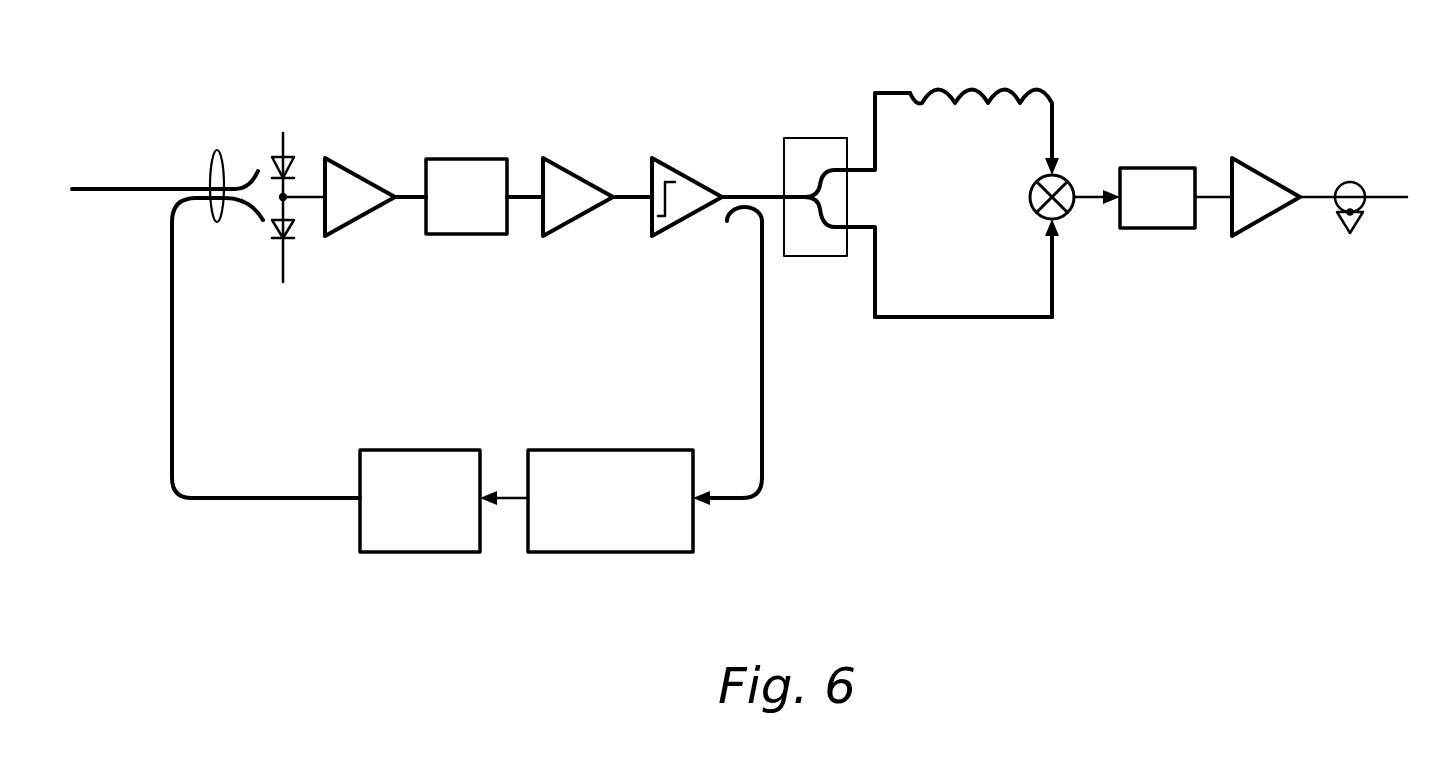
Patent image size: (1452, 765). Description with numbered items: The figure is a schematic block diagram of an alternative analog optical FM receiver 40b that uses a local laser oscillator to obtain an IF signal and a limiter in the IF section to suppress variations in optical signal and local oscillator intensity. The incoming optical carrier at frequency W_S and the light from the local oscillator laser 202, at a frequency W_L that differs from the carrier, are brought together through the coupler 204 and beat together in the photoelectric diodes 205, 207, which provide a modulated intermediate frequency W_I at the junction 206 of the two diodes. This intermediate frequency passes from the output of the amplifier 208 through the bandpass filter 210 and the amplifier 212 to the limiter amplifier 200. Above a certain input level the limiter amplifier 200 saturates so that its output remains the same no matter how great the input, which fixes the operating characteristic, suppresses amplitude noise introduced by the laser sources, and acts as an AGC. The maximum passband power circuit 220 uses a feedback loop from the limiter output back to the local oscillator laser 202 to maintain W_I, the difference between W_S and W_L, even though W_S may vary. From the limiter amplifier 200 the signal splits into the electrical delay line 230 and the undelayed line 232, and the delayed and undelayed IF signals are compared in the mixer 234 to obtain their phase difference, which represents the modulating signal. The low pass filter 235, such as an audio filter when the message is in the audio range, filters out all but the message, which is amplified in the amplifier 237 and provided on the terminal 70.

The heterodyne optical receiver 40b is at (663, 38).
The optical coupler 204 is at (216, 153).
The photoelectric diode 205 is at (277, 153).
The junction 206 is at (288, 201).
The photoelectric diode 207 is at (277, 227).
The amplifier 208 is at (341, 157).
The bandpass filter 210 is at (460, 158).
The amplifier 212 is at (573, 175).
The limiter amplifier 200 is at (688, 175).
The electrical delay line 230 is at (908, 93).
The undelayed line 232 is at (960, 318).
The mixer 234 is at (1063, 183).
The low pass filter 235 is at (1167, 168).
The amplifier 237 is at (1265, 175).
The terminal 70 is at (1362, 185).
The local oscillator laser 202 is at (440, 450).
The maximum passband power circuit 220 is at (622, 450).